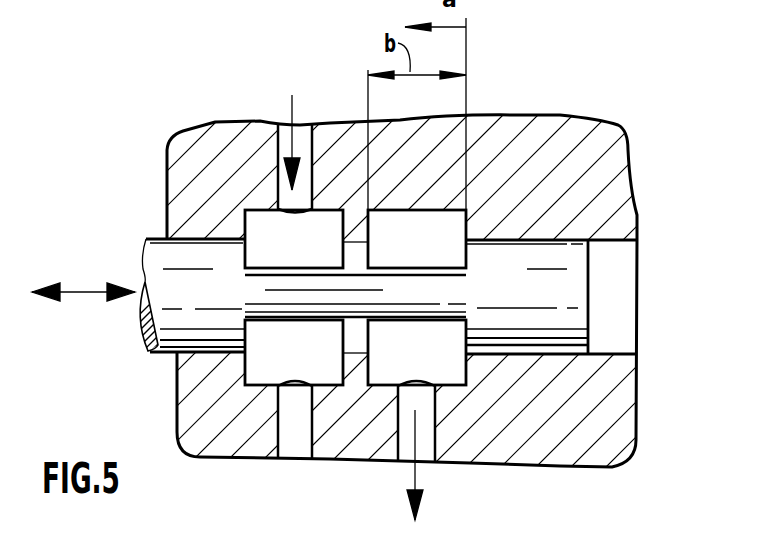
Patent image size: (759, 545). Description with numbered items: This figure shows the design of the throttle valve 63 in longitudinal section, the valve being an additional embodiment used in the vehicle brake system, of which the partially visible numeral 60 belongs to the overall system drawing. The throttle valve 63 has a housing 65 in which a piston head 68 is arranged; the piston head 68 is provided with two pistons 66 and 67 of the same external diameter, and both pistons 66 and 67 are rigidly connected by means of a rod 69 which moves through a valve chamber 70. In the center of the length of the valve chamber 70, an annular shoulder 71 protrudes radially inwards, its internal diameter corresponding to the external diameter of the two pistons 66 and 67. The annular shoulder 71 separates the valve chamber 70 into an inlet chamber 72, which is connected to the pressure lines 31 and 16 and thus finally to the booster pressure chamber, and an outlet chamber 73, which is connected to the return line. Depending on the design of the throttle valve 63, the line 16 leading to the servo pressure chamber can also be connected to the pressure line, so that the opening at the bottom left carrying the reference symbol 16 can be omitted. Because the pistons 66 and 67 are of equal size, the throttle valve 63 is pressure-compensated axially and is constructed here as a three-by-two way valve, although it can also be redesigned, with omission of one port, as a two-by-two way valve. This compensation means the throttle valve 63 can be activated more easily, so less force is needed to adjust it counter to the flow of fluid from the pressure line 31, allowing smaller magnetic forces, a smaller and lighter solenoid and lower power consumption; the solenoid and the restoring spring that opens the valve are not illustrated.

The pressure line 16 is at (302, 443).
The pressure line 31 is at (290, 110).
The valve 60 is at (53, 5).
The throttle valve 63 is at (528, 106).
The housing 65 is at (618, 152).
The piston 66 is at (160, 355).
The piston 67 is at (580, 322).
The piston head 68 is at (511, 293).
The rod 69 is at (318, 314).
The valve chamber 70 is at (268, 392).
The annular shoulder 71 is at (347, 243).
The inlet chamber 72 is at (270, 228).
The outlet chamber 73 is at (448, 367).